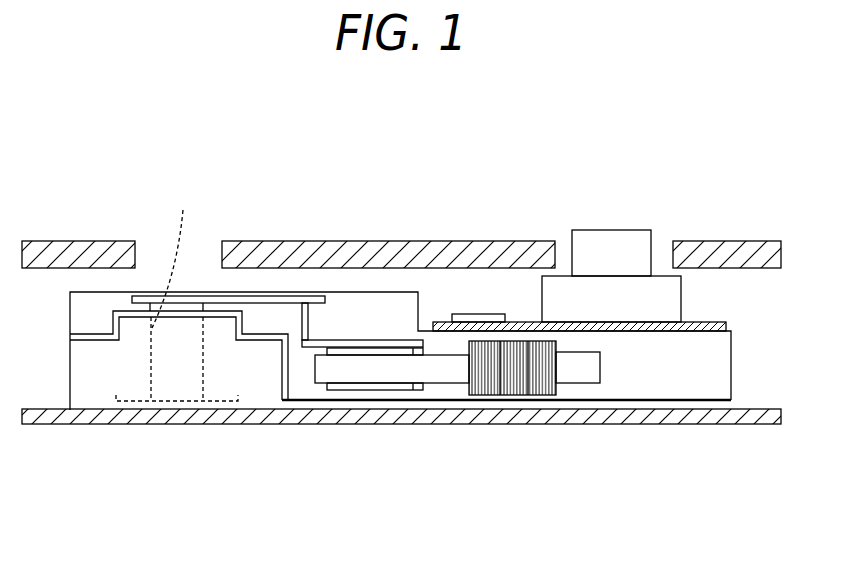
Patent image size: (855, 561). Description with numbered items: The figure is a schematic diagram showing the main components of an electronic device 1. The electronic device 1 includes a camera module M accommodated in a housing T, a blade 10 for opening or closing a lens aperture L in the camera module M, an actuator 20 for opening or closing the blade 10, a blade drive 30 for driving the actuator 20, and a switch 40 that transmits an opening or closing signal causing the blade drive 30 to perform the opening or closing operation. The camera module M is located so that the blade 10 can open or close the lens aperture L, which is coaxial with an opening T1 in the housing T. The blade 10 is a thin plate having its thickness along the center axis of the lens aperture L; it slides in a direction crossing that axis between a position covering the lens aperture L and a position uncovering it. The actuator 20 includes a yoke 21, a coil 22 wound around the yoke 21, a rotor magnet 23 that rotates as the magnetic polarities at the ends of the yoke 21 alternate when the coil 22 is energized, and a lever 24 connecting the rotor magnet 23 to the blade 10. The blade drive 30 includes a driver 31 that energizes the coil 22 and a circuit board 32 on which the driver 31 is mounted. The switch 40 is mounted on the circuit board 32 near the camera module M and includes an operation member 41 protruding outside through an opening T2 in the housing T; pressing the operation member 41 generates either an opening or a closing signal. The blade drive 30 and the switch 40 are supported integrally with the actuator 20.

The electronic device 1 is at (751, 170).
The camera module M is at (180, 452).
The housing T is at (373, 241).
The opening T1 is at (138, 252).
The opening T2 is at (557, 240).
The lens aperture L is at (177, 292).
The blade 10 is at (243, 299).
The lever 24 is at (309, 322).
The actuator 20 is at (453, 427).
The yoke 21 is at (584, 384).
The coil 22 is at (510, 396).
The rotor magnet 23 is at (350, 392).
The blade drive 30 is at (615, 259).
The driver 31 is at (461, 313).
The circuit board 32 is at (727, 323).
The switch 40 is at (683, 303).
The operation member 41 is at (623, 229).